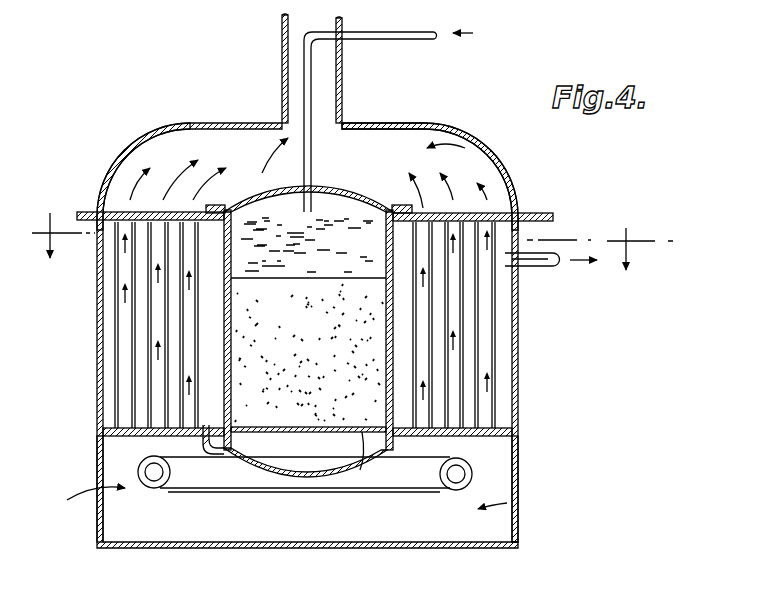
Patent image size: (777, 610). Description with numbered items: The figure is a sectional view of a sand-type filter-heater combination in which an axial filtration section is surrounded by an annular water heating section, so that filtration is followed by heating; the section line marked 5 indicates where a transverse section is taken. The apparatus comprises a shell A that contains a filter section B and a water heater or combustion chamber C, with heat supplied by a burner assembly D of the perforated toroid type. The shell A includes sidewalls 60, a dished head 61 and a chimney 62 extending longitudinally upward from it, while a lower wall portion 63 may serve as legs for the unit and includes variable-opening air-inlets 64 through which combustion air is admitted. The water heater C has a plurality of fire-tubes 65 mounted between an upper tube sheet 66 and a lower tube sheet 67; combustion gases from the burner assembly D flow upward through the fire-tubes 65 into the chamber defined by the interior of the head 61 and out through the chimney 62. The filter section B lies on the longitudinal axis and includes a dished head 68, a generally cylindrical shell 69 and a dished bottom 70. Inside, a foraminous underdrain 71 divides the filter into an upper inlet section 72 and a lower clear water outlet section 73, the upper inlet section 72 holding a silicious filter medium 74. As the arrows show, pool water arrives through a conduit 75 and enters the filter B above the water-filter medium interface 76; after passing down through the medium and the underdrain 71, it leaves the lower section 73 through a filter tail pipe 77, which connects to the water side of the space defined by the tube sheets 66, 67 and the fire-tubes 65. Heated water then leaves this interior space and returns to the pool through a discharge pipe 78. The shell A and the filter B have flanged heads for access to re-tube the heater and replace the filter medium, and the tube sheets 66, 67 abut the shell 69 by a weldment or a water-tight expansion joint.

The sidewalls 60 is at (518, 354).
The dished head 61 is at (500, 164).
The chimney 62 is at (341, 93).
The lower wall portion 63 is at (518, 461).
The variable-opening air-inlets 64 is at (97, 507).
The fire-tubes 65 is at (115, 316).
The upper tube sheet 66 is at (125, 173).
The lower tube sheet 67 is at (518, 427).
The dished head 68 is at (341, 193).
The cylindrical shell 69 is at (232, 301).
The dished bottom 70 is at (312, 482).
The foraminous underdrain 71 is at (362, 440).
The upper inlet section 72 is at (317, 334).
The lower clear water outlet section 73 is at (316, 473).
The filter medium 74 is at (280, 367).
The conduit 75 is at (389, 27).
The water-filter medium interface 76 is at (300, 277).
The filter tail pipe 77 is at (215, 448).
The discharge pipe 78 is at (537, 264).
The section line 5- 5 is at (352, 228).
The shell A is at (523, 195).
The filter section B is at (297, 407).
The water heater or combustion chamber C is at (120, 432).
The burner assembly D is at (436, 480).